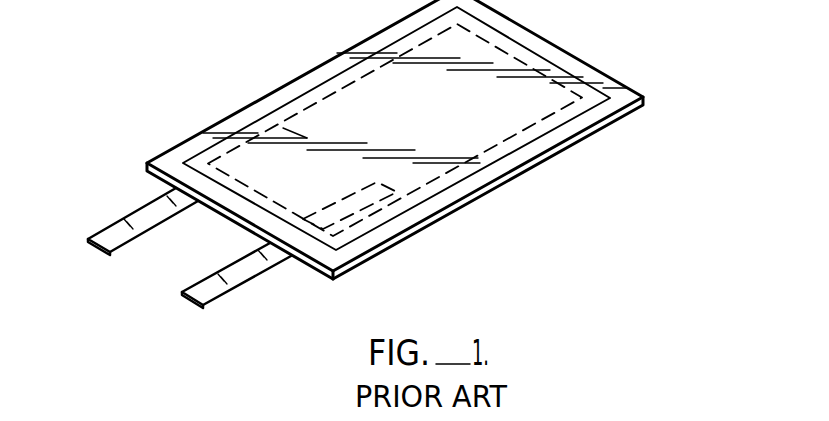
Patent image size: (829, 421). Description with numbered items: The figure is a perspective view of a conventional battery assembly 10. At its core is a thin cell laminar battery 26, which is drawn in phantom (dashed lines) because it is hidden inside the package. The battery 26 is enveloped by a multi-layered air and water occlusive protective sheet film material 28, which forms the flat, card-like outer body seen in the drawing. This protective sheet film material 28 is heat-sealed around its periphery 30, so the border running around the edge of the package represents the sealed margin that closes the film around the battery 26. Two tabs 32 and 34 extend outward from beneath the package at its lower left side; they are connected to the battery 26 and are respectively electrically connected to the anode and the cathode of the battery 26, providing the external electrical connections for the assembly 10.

The battery assembly 10 is at (674, 89).
The thin cell laminar battery 26 is at (443, 190).
The protective sheet film material 28 is at (560, 138).
The periphery 30 is at (601, 96).
The tab 32 is at (92, 243).
The tab 34 is at (188, 296).